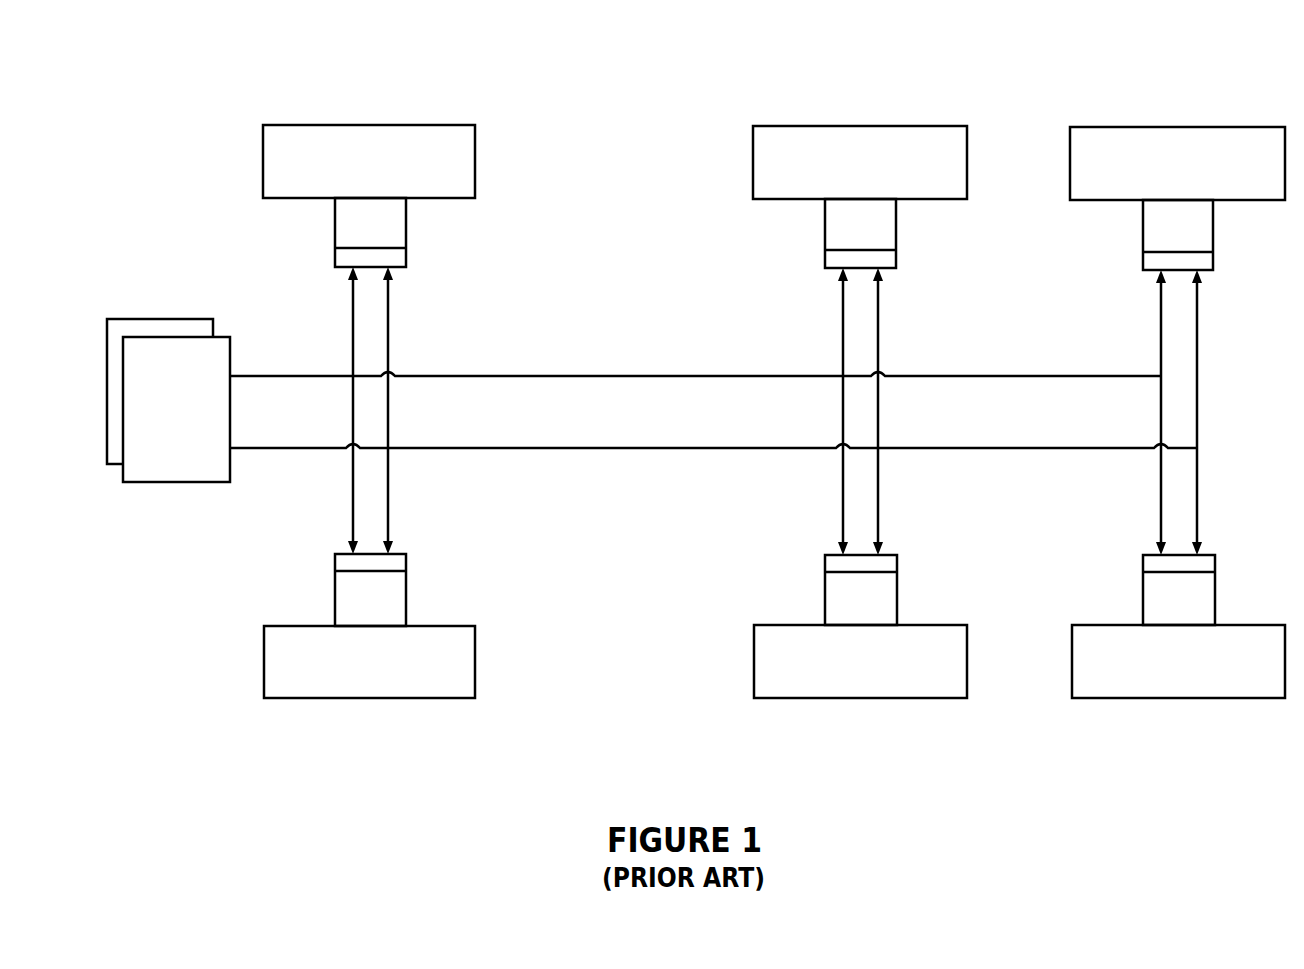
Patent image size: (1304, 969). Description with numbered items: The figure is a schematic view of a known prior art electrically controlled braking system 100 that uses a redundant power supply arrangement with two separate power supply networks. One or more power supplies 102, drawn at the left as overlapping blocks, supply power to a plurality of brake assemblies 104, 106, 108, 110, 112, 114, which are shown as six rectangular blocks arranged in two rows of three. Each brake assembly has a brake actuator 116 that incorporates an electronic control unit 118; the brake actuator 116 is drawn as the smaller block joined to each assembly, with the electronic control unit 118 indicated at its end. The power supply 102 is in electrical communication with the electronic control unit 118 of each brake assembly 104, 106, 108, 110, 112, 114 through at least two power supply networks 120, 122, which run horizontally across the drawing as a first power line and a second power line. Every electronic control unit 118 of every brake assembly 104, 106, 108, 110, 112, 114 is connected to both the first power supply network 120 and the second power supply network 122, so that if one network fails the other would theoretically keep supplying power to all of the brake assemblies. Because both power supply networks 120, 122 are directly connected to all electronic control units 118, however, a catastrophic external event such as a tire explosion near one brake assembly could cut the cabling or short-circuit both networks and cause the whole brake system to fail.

The redundant power supply system 100 is at (423, 772).
The power supply 102 is at (197, 352).
The brake assembly 104 is at (415, 135).
The brake assembly 106 is at (780, 137).
The brake assembly 108 is at (1105, 137).
The brake assembly 110 is at (432, 680).
The brake assembly 112 is at (808, 684).
The brake assembly 114 is at (1100, 684).
The brake actuator 116 is at (387, 222).
The electronic control unit 118 is at (842, 260).
The power supply network 120 is at (698, 411).
The power supply network 122 is at (716, 411).